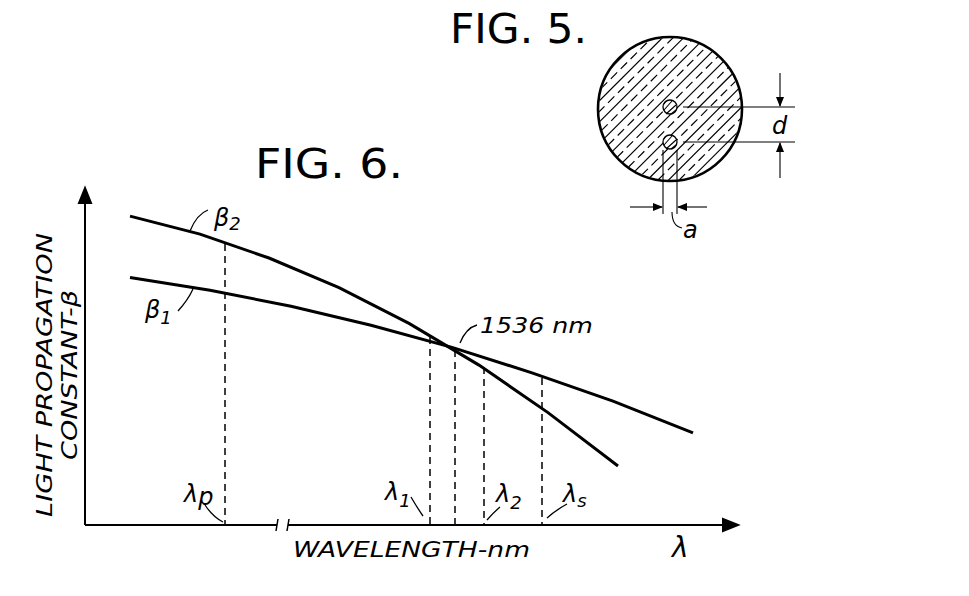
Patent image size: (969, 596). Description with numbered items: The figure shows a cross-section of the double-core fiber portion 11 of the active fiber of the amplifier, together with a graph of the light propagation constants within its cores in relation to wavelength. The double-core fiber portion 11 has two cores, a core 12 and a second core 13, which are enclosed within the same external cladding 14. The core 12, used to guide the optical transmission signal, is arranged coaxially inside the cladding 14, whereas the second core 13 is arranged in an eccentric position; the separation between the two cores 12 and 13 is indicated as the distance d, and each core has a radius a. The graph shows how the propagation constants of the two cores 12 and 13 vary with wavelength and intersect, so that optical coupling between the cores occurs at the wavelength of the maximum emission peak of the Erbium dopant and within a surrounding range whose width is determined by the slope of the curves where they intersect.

The double-core fiber portion 11 is at (588, 109).
The core 12 is at (646, 109).
The second core 13 is at (662, 150).
The external cladding 14 is at (606, 138).